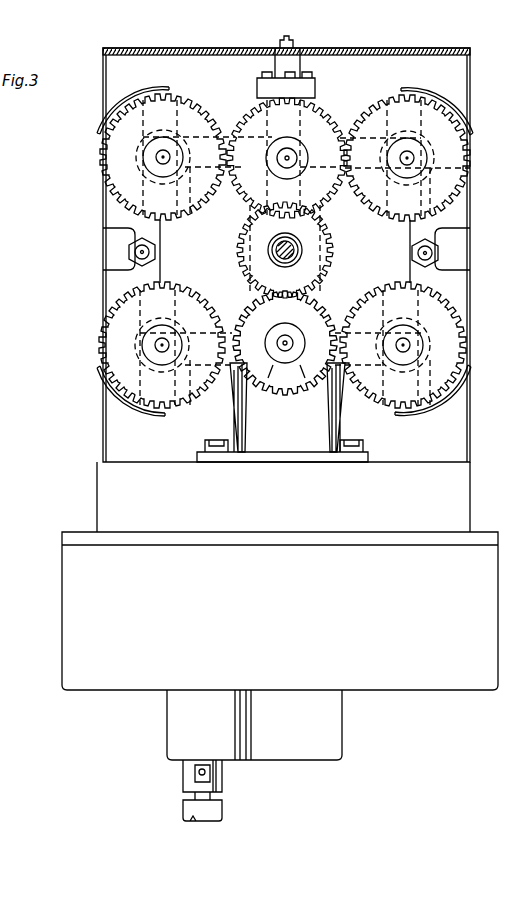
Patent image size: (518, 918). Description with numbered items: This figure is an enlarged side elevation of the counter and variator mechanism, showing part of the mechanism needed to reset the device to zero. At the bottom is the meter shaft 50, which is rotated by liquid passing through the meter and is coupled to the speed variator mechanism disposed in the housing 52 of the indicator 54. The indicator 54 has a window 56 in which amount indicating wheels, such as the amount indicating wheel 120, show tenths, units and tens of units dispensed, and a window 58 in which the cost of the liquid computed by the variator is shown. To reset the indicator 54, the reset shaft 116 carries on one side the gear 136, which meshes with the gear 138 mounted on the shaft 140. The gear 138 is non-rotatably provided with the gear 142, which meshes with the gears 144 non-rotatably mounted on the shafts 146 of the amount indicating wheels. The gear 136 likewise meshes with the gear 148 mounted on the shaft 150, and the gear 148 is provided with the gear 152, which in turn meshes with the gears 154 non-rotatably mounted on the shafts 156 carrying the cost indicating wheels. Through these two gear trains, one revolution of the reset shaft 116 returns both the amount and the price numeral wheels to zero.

The meter shaft 50 is at (222, 795).
The housing 52 is at (488, 632).
The indicator 54 is at (455, 446).
The window 56 is at (470, 365).
The window 58 is at (470, 172).
The reset shaft 116 is at (294, 250).
The amount indicating wheel 120 is at (105, 365).
The gear 136 is at (243, 255).
The gear 138 is at (276, 380).
The shaft 140 is at (286, 346).
The gear 142 is at (288, 398).
The gears 144 is at (131, 400).
The shafts 146 is at (158, 345).
The gear 148 is at (247, 108).
The shaft 150 is at (288, 160).
The gear 152 is at (322, 105).
The gears 154 is at (117, 155).
The shafts 156 is at (412, 158).